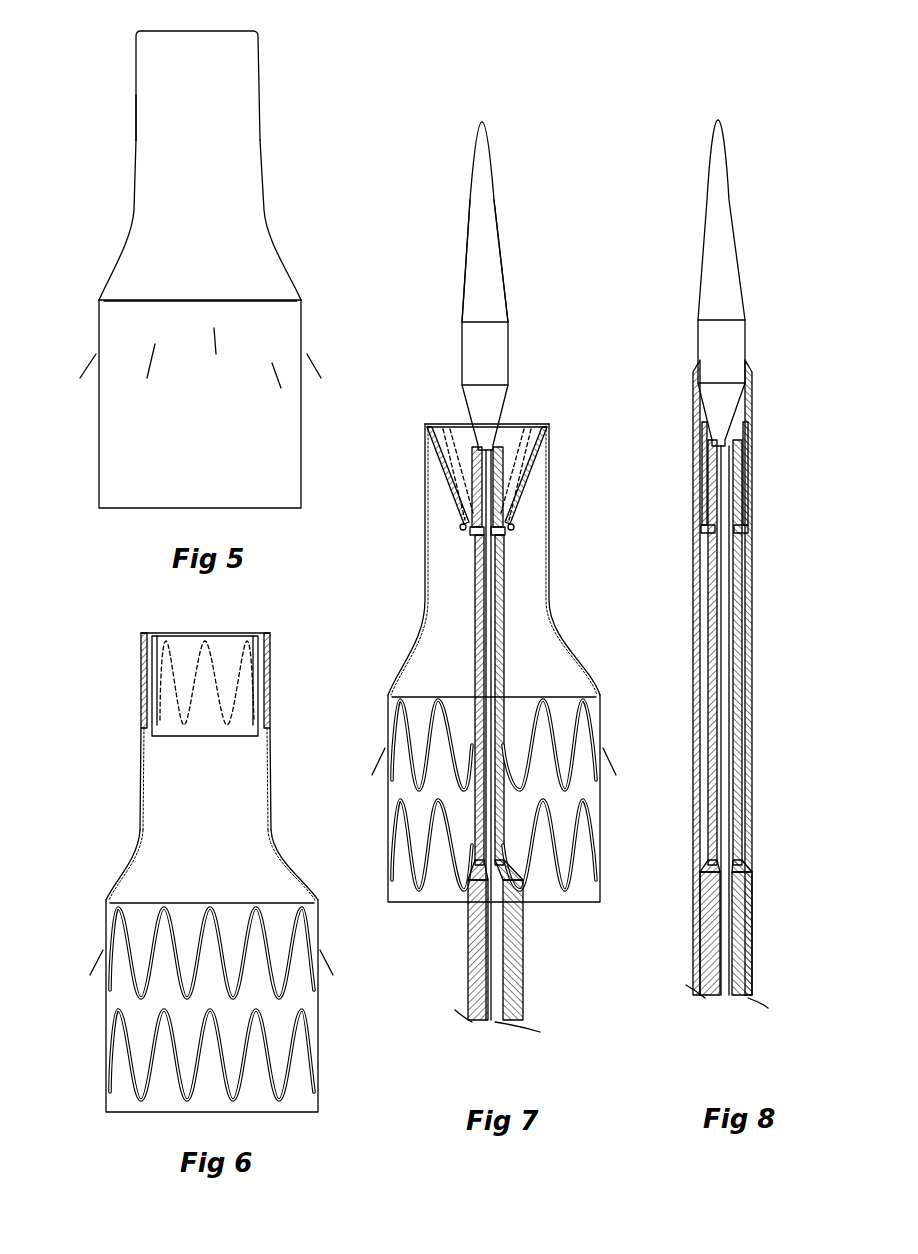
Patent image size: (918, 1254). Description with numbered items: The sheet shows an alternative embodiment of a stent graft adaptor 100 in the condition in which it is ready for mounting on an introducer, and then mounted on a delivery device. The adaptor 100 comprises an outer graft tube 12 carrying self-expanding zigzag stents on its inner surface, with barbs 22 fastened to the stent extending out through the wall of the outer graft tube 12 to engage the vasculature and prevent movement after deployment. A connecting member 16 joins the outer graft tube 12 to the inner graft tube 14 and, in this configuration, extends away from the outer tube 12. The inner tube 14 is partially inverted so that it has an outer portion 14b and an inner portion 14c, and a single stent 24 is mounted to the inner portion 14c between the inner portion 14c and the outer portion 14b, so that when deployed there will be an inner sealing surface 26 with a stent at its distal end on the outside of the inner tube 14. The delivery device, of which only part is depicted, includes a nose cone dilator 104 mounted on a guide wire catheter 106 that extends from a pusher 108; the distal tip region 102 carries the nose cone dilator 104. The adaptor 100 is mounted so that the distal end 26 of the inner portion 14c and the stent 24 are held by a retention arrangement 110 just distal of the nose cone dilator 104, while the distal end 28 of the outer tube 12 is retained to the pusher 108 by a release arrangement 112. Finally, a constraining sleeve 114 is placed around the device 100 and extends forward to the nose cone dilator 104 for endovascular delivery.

In FIG. 5, the outer graft tube 12 is at (99, 455).
In FIG. 6, the outer graft tube 12 is at (106, 1078).
In FIG. 7, the outer graft tube 12 is at (494, 795).
In FIG. 5, the inner graft tube 14 is at (275, 83).
In FIG. 6, the inner graft tube 14 is at (140, 652).
In FIG. 5, the outer portion of the inner tube 14b is at (136, 100).
In FIG. 6, the outer portion of the inner tube 14b is at (141, 720).
In FIG. 6, the inner portion of the inner tube 14c is at (160, 672).
In FIG. 7, the inner portion of the inner tube 14c is at (445, 487).
In FIG. 5, the connecting member 16 is at (135, 190).
In FIG. 6, the connecting member 16 is at (120, 862).
In FIG. 6, the barbs 22 is at (106, 975).
In FIG. 6, the stent 24 is at (155, 680).
In FIG. 7, the stent 24 is at (437, 458).
In FIG. 6, the inner sealing surface 26 is at (258, 656).
In FIG. 7, the inner sealing surface 26 is at (552, 450).
In FIG. 7, the distal end of the outer tube 28 is at (440, 905).
In FIG. 5, the stent graft adaptor 100 is at (331, 118).
In FIG. 6, the stent graft adaptor 100 is at (288, 700).
In FIG. 7, the stent graft adaptor 100 is at (567, 492).
In FIG. 8, the stent graft adaptor 100 is at (697, 615).
In FIG. 7, the distal tip assembly 102 is at (515, 167).
In FIG. 7, the nose cone dilator 104 is at (475, 262).
In FIG. 8, the nose cone dilator 104 is at (710, 260).
In FIG. 7, the guide wire catheter 106 is at (492, 640).
In FIG. 8, the guide wire catheter 106 is at (724, 765).
In FIG. 7, the pusher 108 is at (520, 955).
In FIG. 8, the pusher 108 is at (706, 925).
In FIG. 7, the retention arrangement 110 is at (528, 523).
In FIG. 7, the release arrangement 112 is at (527, 907).
In FIG. 8, the constraining sleeve 114 is at (752, 590).